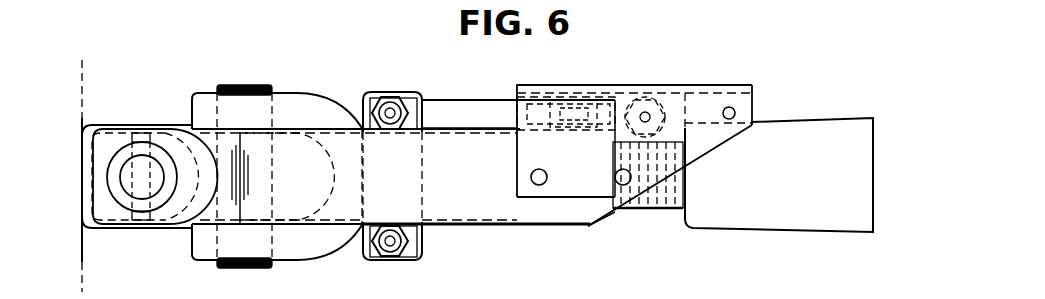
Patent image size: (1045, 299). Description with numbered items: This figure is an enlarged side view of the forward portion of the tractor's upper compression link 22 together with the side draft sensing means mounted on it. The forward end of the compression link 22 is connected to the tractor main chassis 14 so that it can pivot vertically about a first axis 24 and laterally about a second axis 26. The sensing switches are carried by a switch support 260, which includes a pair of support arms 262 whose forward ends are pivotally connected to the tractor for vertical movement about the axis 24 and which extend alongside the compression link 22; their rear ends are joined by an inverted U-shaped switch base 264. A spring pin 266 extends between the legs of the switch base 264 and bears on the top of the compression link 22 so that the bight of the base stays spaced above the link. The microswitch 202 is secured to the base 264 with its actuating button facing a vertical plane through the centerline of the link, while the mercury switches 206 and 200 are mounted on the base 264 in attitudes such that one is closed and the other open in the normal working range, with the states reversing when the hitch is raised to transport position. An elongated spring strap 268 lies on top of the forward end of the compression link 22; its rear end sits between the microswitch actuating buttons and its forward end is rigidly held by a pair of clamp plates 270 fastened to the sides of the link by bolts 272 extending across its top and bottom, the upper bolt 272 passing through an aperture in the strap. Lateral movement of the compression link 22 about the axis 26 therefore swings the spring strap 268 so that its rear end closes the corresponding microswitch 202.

The main chassis 14 is at (82, 128).
The upper compression link 22 is at (815, 127).
The first axis 24 is at (157, 162).
The second axis 26 is at (252, 87).
The mercury switch 200 is at (660, 93).
The microswitch 202 is at (603, 92).
The mercury switch 206 is at (632, 110).
The switch support 260 is at (712, 77).
The support arms 262 is at (495, 213).
The switch base 264 is at (738, 85).
The spring pin 266 is at (735, 115).
The spring strap 268 is at (487, 107).
The clamp plates 270 is at (397, 93).
The bolts 272 is at (410, 113).